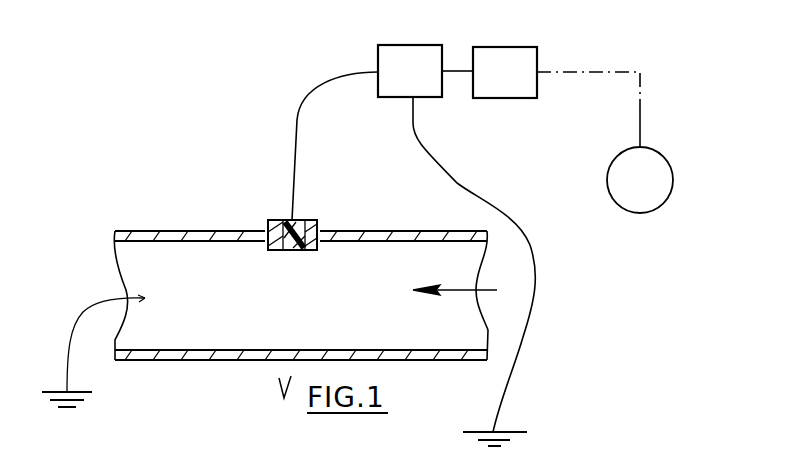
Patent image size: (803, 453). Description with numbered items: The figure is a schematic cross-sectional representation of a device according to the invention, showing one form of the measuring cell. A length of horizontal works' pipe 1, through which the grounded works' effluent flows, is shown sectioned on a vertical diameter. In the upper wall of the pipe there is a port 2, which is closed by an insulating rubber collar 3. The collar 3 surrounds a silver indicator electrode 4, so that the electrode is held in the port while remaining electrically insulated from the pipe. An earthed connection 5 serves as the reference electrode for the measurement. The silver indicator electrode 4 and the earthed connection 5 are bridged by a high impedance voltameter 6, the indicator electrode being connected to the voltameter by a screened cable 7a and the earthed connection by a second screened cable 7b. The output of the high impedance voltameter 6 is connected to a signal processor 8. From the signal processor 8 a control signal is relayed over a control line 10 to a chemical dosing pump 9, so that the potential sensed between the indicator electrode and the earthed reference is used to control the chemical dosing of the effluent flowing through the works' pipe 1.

The works' pipe 1 is at (212, 363).
The port 2 is at (265, 226).
The insulating rubber collar 3 is at (320, 223).
The silver indicator electrode 4 is at (298, 218).
The earthed connection 5 is at (503, 421).
The high impedance voltameter 6 is at (410, 63).
The screened cable 7a is at (311, 93).
The screened cable 7b is at (467, 188).
The signal processor 8 is at (508, 68).
The chemical dosing pump 9 is at (634, 200).
The control line 10 is at (640, 122).